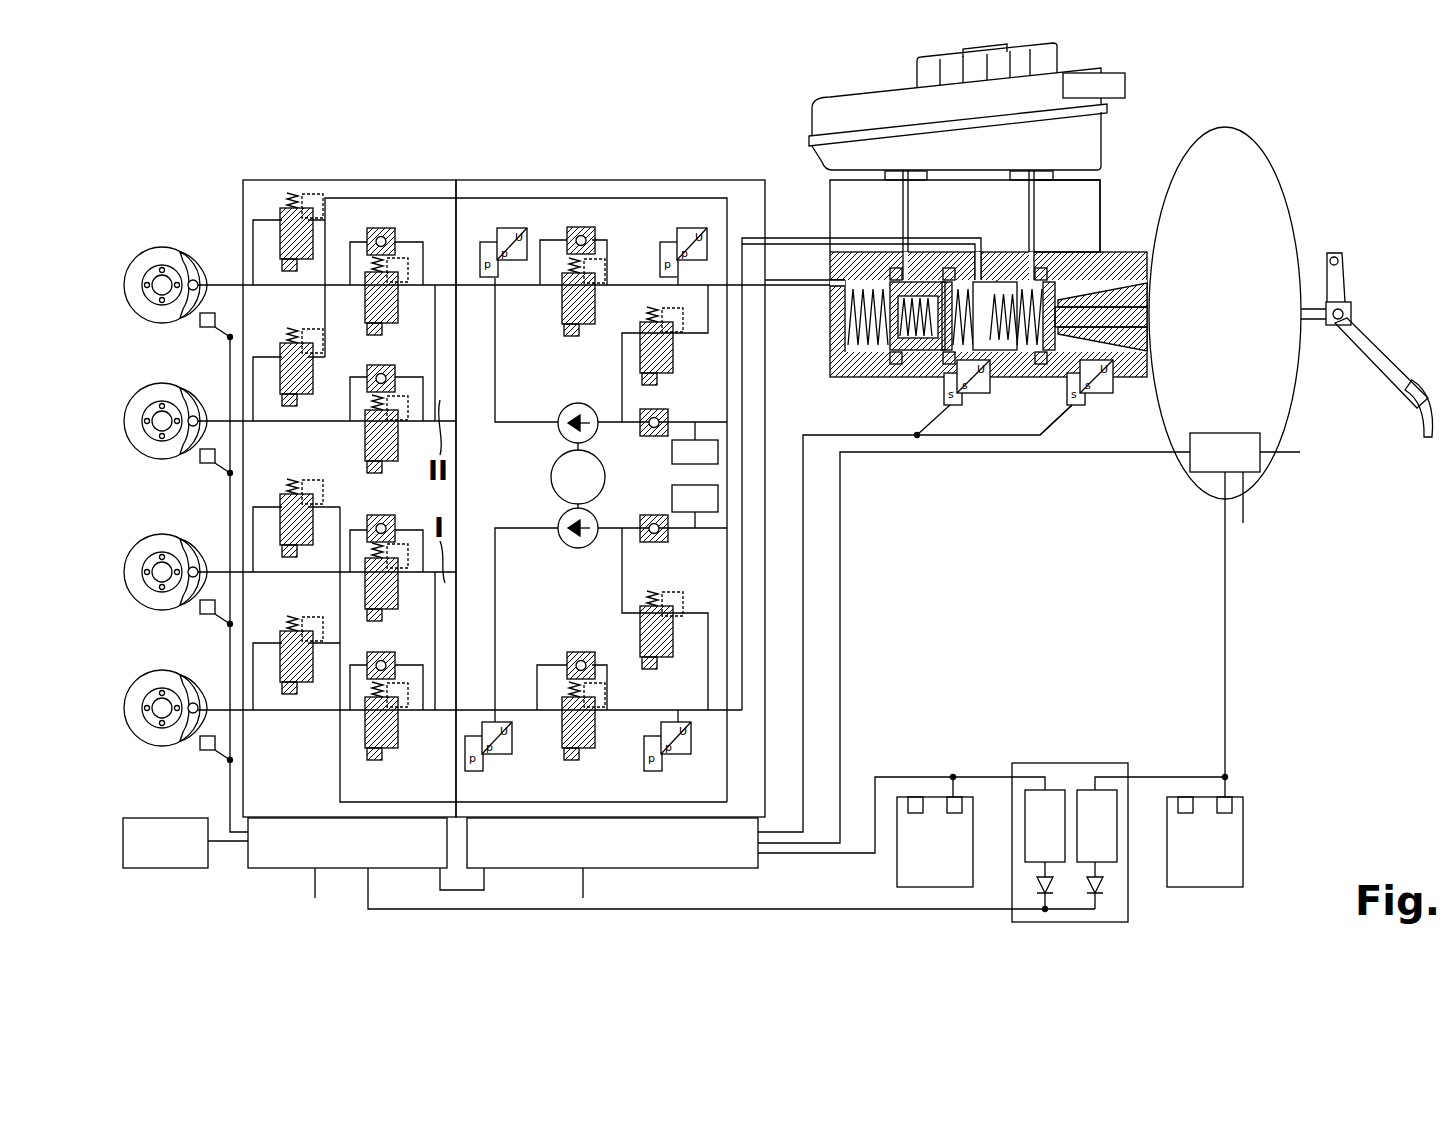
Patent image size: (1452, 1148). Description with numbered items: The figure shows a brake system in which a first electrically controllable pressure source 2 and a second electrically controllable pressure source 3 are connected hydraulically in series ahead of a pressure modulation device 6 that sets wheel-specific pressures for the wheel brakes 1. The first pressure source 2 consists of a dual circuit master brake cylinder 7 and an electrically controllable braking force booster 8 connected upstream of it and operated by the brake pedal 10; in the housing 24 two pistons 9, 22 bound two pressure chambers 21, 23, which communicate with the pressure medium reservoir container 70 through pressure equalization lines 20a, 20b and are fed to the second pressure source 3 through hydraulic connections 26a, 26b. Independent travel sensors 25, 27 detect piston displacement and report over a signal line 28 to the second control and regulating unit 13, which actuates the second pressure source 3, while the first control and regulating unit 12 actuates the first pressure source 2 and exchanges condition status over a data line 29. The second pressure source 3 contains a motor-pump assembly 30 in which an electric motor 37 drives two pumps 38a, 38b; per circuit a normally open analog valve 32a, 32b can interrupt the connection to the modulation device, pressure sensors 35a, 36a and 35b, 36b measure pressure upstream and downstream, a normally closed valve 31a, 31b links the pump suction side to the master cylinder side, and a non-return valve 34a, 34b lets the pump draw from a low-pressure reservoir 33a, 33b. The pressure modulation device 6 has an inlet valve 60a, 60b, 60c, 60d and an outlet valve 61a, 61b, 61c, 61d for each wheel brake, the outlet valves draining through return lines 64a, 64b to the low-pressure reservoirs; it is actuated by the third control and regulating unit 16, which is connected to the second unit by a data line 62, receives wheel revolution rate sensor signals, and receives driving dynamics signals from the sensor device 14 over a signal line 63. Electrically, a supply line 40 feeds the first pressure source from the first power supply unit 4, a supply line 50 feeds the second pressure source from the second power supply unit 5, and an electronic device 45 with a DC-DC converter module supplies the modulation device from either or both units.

The wheel brakes 1 is at (190, 262).
The first electrically controllable pressure source 2 is at (1246, 284).
The second electrically controllable pressure source 3 is at (577, 179).
The first electrical power supply unit 4 is at (1205, 877).
The second electrical power supply unit 5 is at (933, 877).
The electrically controllable pressure modulation device 6 is at (316, 179).
The dual circuit master brake cylinder 7 is at (994, 283).
The electrically controllable braking force booster 8 is at (1274, 225).
The piston 9 is at (1120, 290).
The brake pedal 10 is at (1368, 345).
The first electronic control and regulating unit 12 is at (1260, 490).
The second electronic control and regulating unit 13 is at (200, 326).
The sensor device 14 is at (168, 868).
The third electronic control and regulating unit 16 is at (282, 853).
The pressure equalization line 20a is at (1035, 193).
The pressure equalization line 20b is at (908, 205).
The hydraulic pressure chamber 21 is at (997, 290).
The piston 22 is at (930, 345).
The hydraulic pressure chamber 23 is at (878, 345).
The housing 24 is at (1088, 205).
The travel sensor 25 is at (1100, 400).
The hydraulic connection 26a is at (790, 252).
The hydraulic connection 26b is at (815, 288).
The travel sensor 27 is at (962, 405).
The signal or data line 28 is at (803, 540).
The data line 29 is at (1085, 453).
The electrically controllable pressure supply device 30 is at (540, 478).
The normally closed valve 31a is at (640, 636).
The normally closed valve 31b is at (640, 356).
The normally open analog-actuated valve 32a is at (596, 735).
The normally open analog-actuated valve 32b is at (563, 290).
The low-pressure reservoir 33a is at (695, 514).
The low-pressure reservoir 33b is at (693, 440).
The non-return valve 34a is at (645, 540).
The non-return valve 34b is at (640, 420).
The pressure sensor 35a is at (693, 738).
The pressure sensor 35b is at (680, 227).
The pressure sensor 36a is at (513, 738).
The pressure sensor 36b is at (508, 227).
The electric motor 37 is at (560, 487).
The pump 38a is at (592, 520).
The pump 38b is at (592, 438).
The supply line 40 is at (1226, 638).
The electronic device 45 is at (1071, 762).
The supply line 50 is at (905, 777).
The inlet valve 60a is at (398, 732).
The inlet valve 60b is at (396, 590).
The inlet valve 60c is at (396, 450).
The inlet valve 60d is at (396, 306).
The outlet valve 61a is at (286, 686).
The outlet valve 61b is at (286, 548).
The outlet valve 61c is at (286, 397).
The outlet valve 61d is at (286, 262).
The data line 62 is at (484, 888).
The signal line or data line 63 is at (228, 843).
The return line 64a is at (338, 765).
The return line 64b is at (412, 197).
The pressure medium reservoir container 70 is at (872, 105).